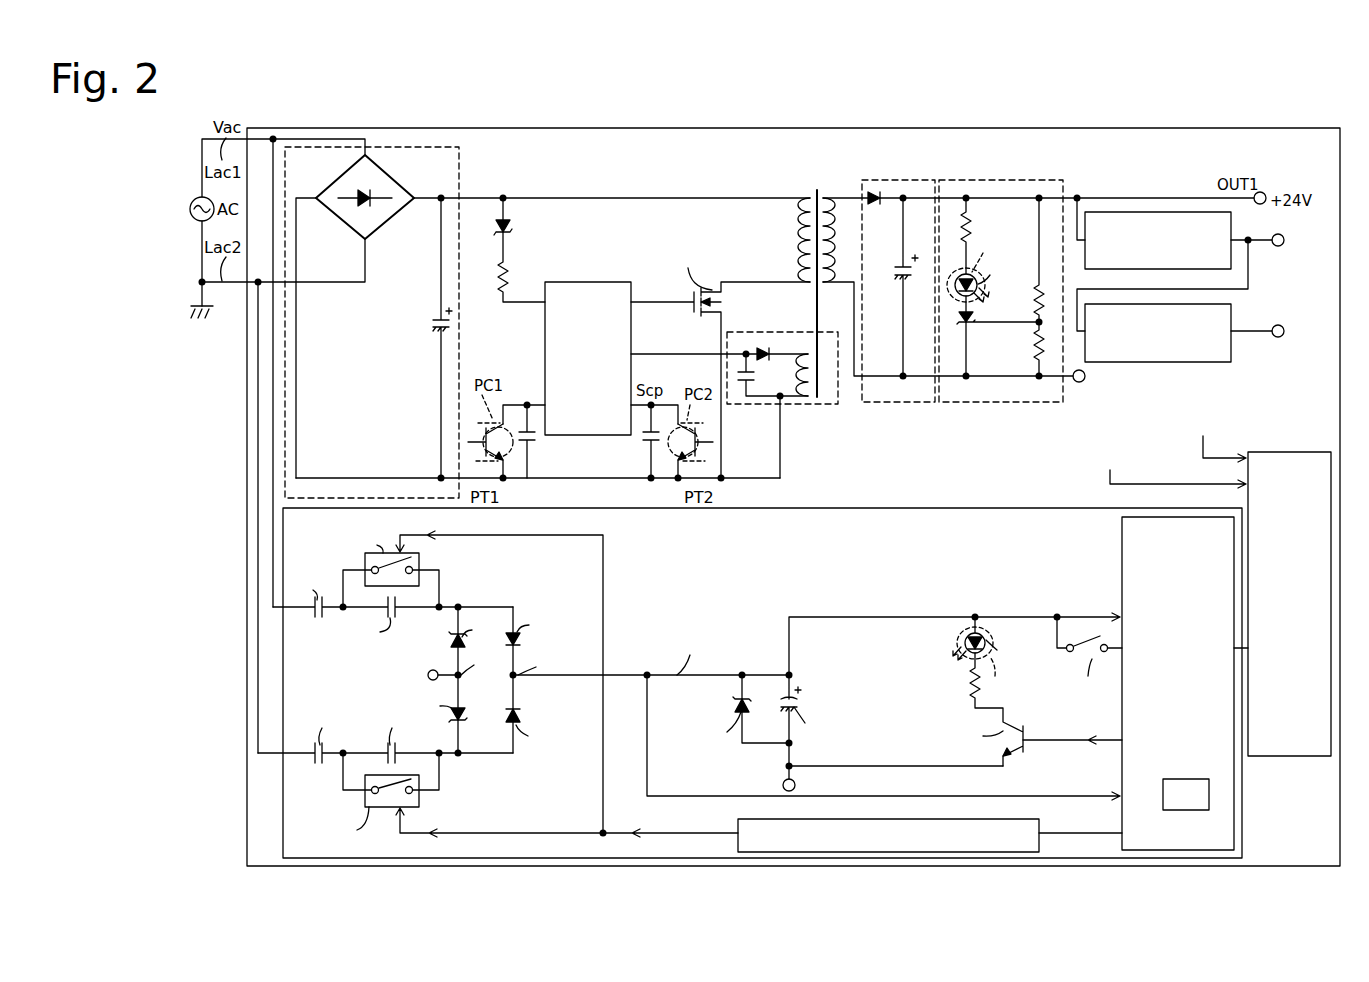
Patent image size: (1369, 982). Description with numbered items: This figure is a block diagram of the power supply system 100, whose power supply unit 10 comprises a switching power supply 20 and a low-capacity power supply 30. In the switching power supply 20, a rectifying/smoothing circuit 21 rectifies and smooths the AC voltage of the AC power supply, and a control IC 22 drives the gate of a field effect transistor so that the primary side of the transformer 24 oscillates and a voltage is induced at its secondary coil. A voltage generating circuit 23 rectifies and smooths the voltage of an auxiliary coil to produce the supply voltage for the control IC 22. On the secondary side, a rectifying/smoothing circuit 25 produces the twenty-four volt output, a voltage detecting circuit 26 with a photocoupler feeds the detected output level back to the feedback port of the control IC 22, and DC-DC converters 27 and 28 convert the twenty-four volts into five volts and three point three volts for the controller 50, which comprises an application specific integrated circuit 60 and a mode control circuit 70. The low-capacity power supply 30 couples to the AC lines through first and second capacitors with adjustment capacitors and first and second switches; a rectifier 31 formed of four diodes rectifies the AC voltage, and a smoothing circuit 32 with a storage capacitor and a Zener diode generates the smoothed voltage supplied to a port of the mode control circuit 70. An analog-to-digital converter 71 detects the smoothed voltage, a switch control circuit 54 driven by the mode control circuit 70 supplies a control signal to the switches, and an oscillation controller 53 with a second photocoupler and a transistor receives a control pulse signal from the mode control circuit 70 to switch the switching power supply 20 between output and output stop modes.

The power supply system 100 is at (1125, 129).
The power supply unit 10 is at (826, 446).
The switching power supply 20 is at (744, 175).
The rectifying/smoothing circuit 21 is at (460, 161).
The control IC 22 is at (582, 282).
The voltage generating circuit 23 is at (767, 330).
The transformer 24 is at (817, 178).
The rectifying/smoothing circuit 25 is at (920, 180).
The voltage detecting circuit 26 is at (1008, 180).
The DC-DC converter 27 is at (1133, 212).
The DC-DC converter 28 is at (1165, 362).
The low-capacity power supply 30 is at (857, 508).
The rectifier 31 is at (539, 580).
The smoothing circuit 32 is at (768, 614).
The controller 50 is at (945, 477).
The oscillation controller 53 is at (996, 594).
The switch control circuit 54 is at (1042, 828).
The application specific integrated circuit (ASIC) 60 is at (1288, 452).
The mode control circuit 70 is at (1234, 781).
The A/D converter 71 is at (1209, 795).